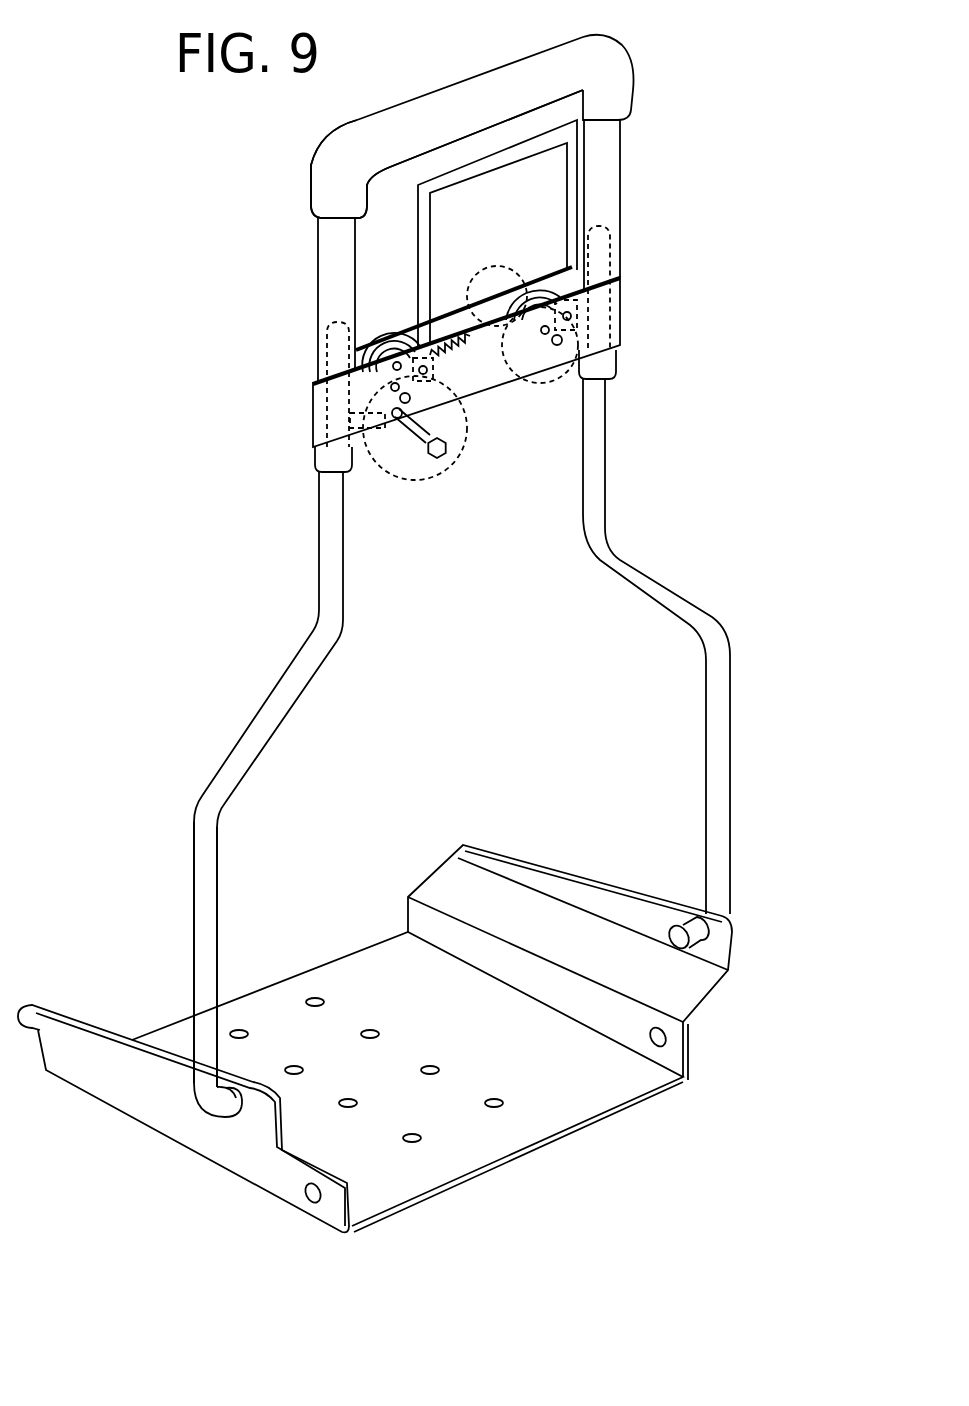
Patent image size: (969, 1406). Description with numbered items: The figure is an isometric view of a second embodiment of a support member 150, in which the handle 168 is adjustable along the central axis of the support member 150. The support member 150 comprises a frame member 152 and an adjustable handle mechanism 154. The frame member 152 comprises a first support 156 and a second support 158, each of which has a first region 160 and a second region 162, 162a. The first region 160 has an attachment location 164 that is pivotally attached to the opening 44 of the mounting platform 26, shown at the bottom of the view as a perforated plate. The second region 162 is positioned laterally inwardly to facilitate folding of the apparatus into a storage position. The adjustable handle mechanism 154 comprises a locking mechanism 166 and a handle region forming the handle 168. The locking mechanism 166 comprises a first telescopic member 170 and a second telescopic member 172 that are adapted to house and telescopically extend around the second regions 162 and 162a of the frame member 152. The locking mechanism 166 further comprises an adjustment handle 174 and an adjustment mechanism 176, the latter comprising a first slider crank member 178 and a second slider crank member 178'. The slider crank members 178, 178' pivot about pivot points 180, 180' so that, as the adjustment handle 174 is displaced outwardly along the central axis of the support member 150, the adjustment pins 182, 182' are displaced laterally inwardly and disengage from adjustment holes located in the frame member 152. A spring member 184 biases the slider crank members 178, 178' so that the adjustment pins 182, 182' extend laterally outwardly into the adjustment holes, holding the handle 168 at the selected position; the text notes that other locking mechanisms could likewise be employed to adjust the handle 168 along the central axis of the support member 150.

The mounting platform 26 is at (483, 1128).
The opening 44 is at (252, 1110).
The support member 150 is at (210, 694).
The frame member 152 is at (323, 503).
The adjustable handle mechanism 154 is at (270, 290).
The first support 156 is at (323, 533).
The second support 158 is at (600, 424).
The first region 160 is at (202, 917).
The second region 162 is at (323, 570).
The second region 162a is at (596, 459).
The attachment location 164 is at (203, 1100).
The locking mechanism 166 is at (607, 297).
The handle 168 is at (495, 87).
The first telescopic member 170 is at (330, 258).
The second telescopic member 172 is at (608, 190).
The adjustment handle 174 is at (476, 160).
The adjustment mechanism 176 is at (462, 447).
The first slider crank member 178 is at (330, 382).
The second slider crank member 178' is at (539, 377).
The pivot point 180 is at (319, 412).
The pivot point 180' is at (625, 358).
The adjustment pin 182 is at (415, 439).
The adjustment pin 182' is at (627, 321).
The spring member 184 is at (470, 293).